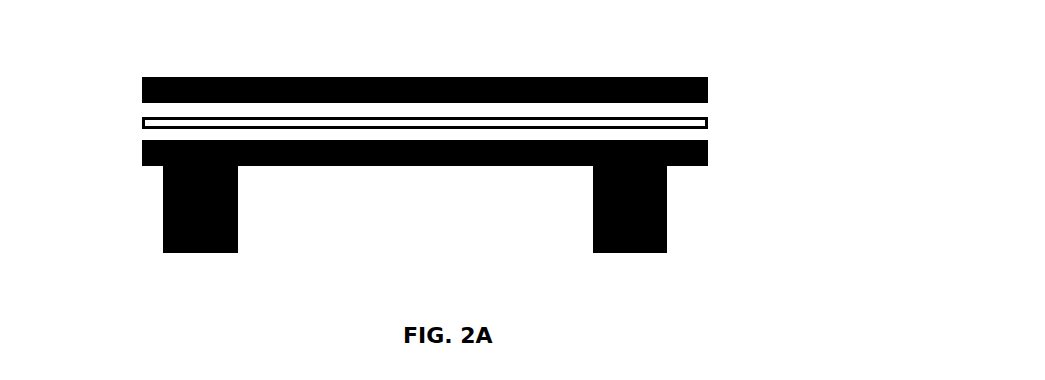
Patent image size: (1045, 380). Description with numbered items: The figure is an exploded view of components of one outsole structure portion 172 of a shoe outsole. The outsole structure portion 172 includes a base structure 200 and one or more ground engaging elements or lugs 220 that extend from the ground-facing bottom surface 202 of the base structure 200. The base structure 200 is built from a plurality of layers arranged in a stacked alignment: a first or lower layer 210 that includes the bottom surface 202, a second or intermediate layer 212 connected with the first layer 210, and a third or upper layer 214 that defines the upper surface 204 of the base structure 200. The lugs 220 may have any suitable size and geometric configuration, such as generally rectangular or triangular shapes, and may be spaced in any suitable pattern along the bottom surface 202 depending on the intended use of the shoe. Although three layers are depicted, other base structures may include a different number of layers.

The outsole structure portion 172 is at (750, 67).
The base structure 200 is at (133, 78).
The bottom surface 202 is at (467, 166).
The upper surface 204 is at (492, 77).
The first or lower layer 210 is at (708, 152).
The second or intermediate layer 212 is at (708, 123).
The third or upper layer 214 is at (708, 93).
The ground engaging elements or lugs 220 is at (667, 238).